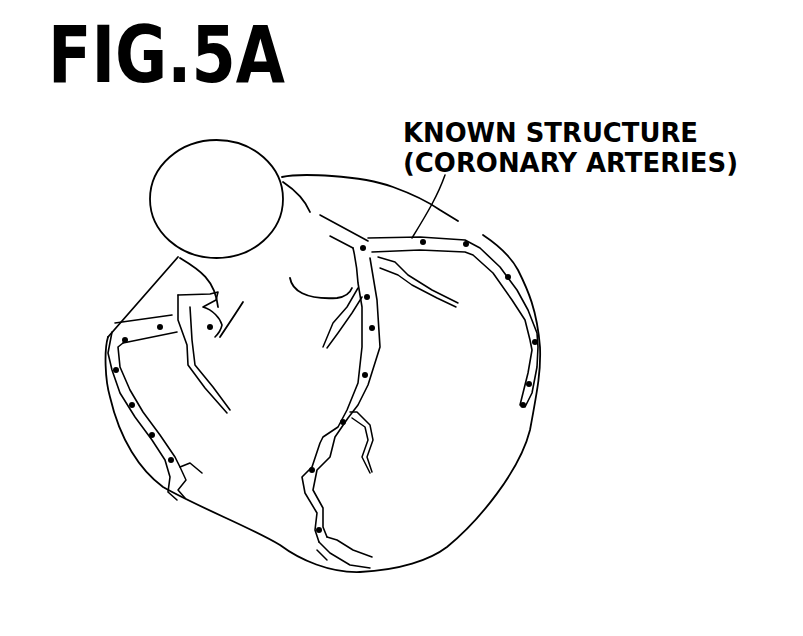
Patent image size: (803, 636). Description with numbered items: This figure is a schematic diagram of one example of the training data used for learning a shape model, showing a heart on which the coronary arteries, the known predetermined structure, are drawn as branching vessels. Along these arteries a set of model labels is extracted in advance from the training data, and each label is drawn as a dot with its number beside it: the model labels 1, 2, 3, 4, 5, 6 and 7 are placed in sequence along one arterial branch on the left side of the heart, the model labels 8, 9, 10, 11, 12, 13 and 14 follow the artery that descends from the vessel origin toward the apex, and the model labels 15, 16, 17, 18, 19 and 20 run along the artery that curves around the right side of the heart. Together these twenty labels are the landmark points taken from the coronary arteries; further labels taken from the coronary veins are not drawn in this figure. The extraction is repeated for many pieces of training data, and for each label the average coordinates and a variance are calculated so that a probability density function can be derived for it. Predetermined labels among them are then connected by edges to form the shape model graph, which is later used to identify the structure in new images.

The model label 1 is at (209, 343).
The model label 2 is at (160, 309).
The model label 3 is at (115, 326).
The model label 4 is at (102, 378).
The model label 5 is at (143, 393).
The model label 6 is at (161, 424).
The model label 7 is at (182, 447).
The model label 8 is at (369, 231).
The model label 9 is at (381, 293).
The model label 10 is at (391, 329).
The model label 11 is at (347, 369).
The model label 12 is at (325, 411).
The model label 13 is at (296, 459).
The model label 14 is at (339, 521).
The model label 15 is at (428, 259).
The model label 16 is at (473, 228).
The model label 17 is at (528, 266).
The model label 18 is at (553, 343).
The model label 19 is at (550, 386).
The model label 20 is at (507, 413).